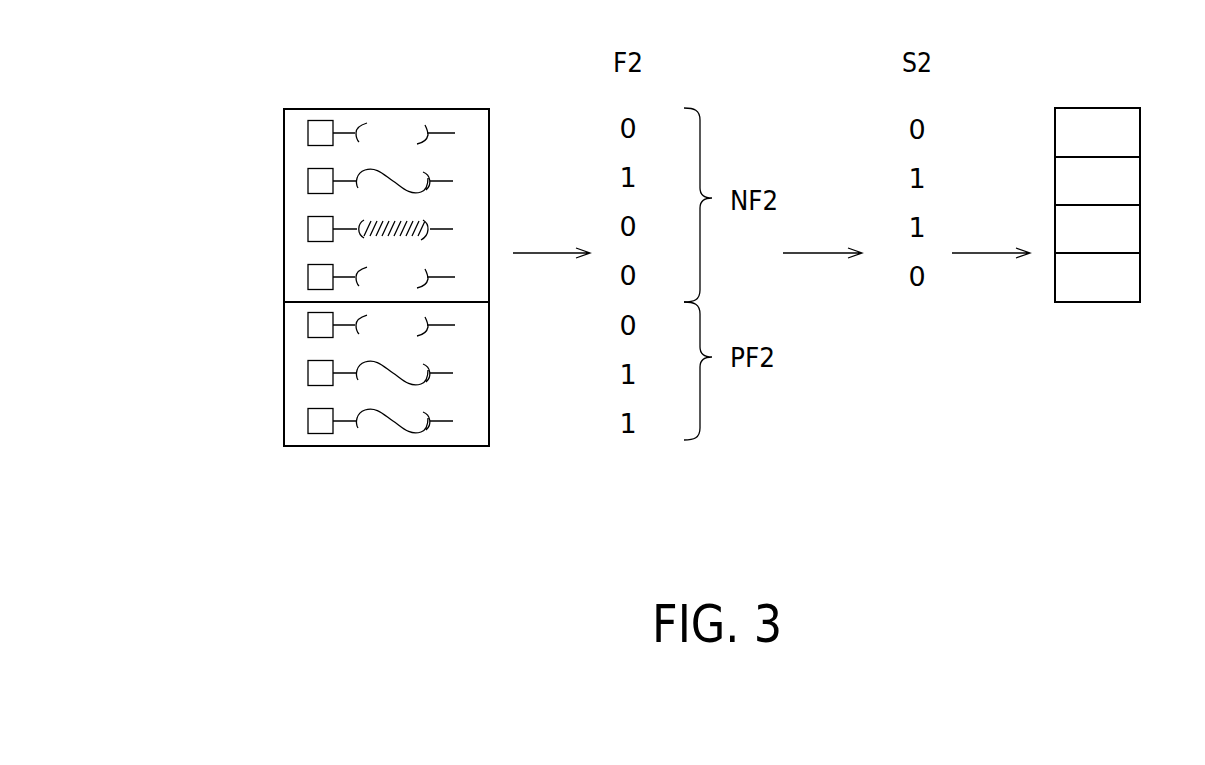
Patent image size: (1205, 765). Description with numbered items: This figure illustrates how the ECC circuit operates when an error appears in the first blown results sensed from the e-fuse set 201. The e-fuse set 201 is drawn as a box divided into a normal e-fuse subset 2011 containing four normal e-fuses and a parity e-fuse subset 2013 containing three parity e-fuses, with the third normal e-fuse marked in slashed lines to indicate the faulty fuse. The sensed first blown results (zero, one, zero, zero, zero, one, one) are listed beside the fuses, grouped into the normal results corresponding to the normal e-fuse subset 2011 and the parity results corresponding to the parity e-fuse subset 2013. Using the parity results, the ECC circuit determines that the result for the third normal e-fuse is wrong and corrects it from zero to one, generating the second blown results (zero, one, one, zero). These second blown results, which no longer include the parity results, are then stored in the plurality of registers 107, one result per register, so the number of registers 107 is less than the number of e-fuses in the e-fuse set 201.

The e-fuse set 201 is at (317, 253).
The normal e-fuse subset 2011 is at (248, 108).
The parity e-fuse subset 2013 is at (248, 442).
The plurality of registers 107 is at (1100, 108).